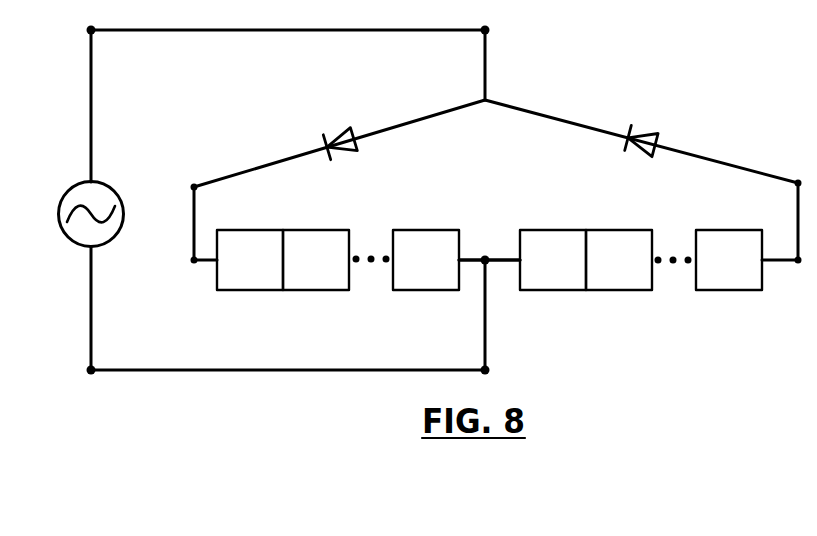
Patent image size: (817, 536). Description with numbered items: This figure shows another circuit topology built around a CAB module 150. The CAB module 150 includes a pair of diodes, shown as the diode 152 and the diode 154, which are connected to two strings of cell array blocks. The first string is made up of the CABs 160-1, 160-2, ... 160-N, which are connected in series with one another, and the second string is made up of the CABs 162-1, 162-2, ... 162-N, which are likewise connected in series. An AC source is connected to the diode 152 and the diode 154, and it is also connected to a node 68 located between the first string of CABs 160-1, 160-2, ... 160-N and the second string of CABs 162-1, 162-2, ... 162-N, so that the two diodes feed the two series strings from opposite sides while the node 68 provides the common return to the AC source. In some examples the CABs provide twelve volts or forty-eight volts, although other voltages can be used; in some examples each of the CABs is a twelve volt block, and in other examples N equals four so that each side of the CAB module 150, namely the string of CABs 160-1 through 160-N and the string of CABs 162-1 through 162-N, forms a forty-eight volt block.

The CAB module 150 is at (602, 76).
The diode 152 is at (343, 126).
The second diode 154 is at (644, 127).
The CAB 160-1 is at (254, 229).
The CAB 160-2 is at (342, 229).
The CAB 160-N is at (442, 229).
The common node 68 is at (485, 254).
The CAB 162-1 is at (537, 229).
The CAB 162-2 is at (623, 229).
The CAB 162-N is at (710, 229).